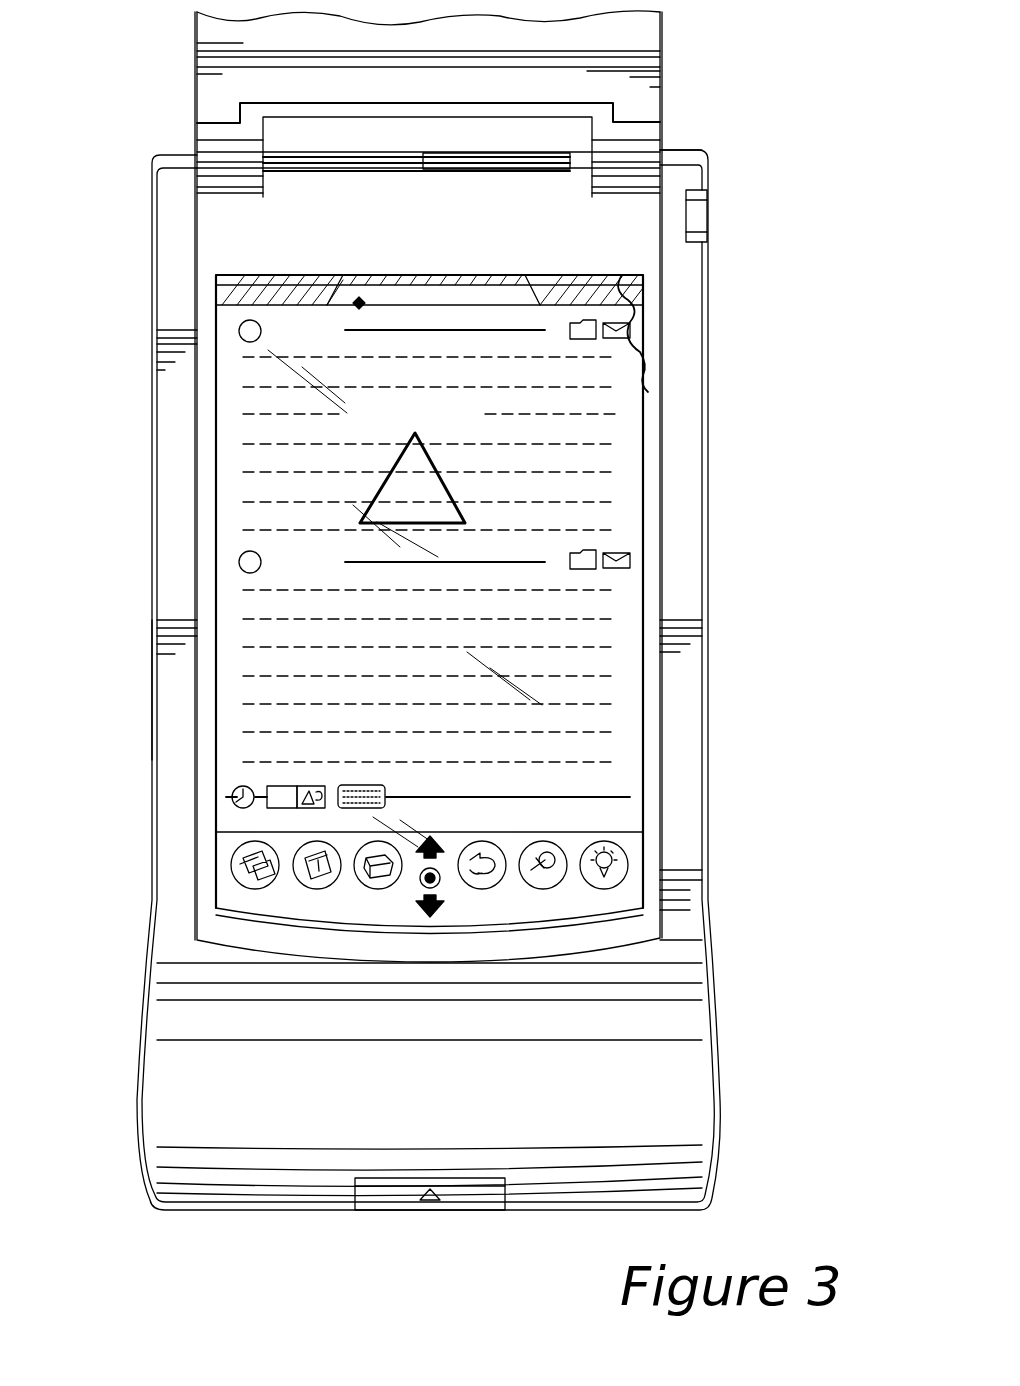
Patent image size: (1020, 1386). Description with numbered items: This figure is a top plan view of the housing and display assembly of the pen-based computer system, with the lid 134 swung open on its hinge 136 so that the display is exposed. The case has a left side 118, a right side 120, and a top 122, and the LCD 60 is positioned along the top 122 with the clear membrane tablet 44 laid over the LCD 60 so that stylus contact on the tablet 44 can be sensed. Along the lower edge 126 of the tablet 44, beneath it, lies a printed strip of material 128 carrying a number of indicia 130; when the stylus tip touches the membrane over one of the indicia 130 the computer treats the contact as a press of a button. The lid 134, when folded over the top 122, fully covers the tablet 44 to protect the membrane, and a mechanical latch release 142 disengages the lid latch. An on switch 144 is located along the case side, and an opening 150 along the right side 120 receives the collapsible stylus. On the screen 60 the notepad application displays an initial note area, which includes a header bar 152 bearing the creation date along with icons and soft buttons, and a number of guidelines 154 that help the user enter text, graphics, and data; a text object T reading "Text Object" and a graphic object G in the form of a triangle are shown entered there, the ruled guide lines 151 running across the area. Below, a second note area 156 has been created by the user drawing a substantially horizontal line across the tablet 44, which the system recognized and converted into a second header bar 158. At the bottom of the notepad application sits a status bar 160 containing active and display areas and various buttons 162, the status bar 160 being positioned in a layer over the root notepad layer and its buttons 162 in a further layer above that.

The lid 134 is at (652, 28).
The hinge 136 is at (652, 143).
The note area 150 is at (700, 218).
The LCD 60 is at (632, 348).
The clear membrane tablet 44 is at (627, 452).
The ruled lines 151 is at (598, 490).
The right side 120 is at (708, 620).
The second note area 156 is at (600, 687).
The status bar 160 is at (630, 795).
The printed strip of material 128 is at (633, 885).
The lower edge 126 is at (450, 913).
The top 122 is at (536, 1093).
The mechanical latch release 142 is at (478, 1212).
The header bar 152 is at (228, 324).
The guidelines 154 is at (243, 444).
The second header bar 158 is at (228, 561).
The left side 118 is at (155, 607).
The on switch 144 is at (150, 700).
The buttons 162 is at (318, 785).
The indicia 130 is at (548, 841).
The text object T is at (470, 390).
The graphic object G is at (448, 474).